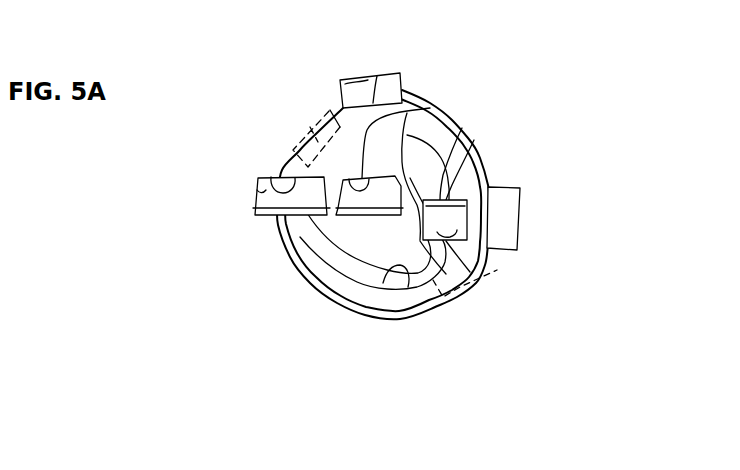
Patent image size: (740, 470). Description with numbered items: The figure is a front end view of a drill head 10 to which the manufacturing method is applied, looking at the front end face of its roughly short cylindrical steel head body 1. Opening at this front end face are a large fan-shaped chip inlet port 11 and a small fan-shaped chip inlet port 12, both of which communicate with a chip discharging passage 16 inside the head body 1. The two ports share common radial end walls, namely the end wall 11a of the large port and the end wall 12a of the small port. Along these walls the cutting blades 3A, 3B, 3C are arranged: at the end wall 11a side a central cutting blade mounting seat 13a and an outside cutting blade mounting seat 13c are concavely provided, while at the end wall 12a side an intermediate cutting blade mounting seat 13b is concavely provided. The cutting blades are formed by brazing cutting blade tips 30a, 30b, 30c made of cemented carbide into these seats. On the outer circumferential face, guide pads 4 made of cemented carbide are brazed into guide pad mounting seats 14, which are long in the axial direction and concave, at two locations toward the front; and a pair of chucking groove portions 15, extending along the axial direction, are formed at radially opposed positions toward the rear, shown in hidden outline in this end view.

The head body 1 is at (469, 112).
The cutting blade 3A is at (302, 272).
The cutting blade 3B is at (480, 150).
The cutting blade 3C is at (261, 216).
The guide pad 4 is at (356, 83).
The housing 10 is at (282, 376).
The chip inlet port 11 is at (360, 260).
The end wall 11a is at (343, 214).
The chip inlet port 12 is at (417, 153).
The end wall 12a is at (450, 180).
The central cutting blade mounting seat 13a is at (350, 180).
The intermediate cutting blade mounting seat 13b is at (455, 242).
The outside cutting blade mounting seat 13c is at (273, 177).
The guide pad mounting seat 14 is at (380, 80).
The chucking groove portion 15 is at (302, 117).
The chip discharging passage 16 is at (383, 283).
The cutting blade tip 30a is at (363, 217).
The cutting blade tip 30b is at (433, 232).
The cutting blade tip 30c is at (267, 195).